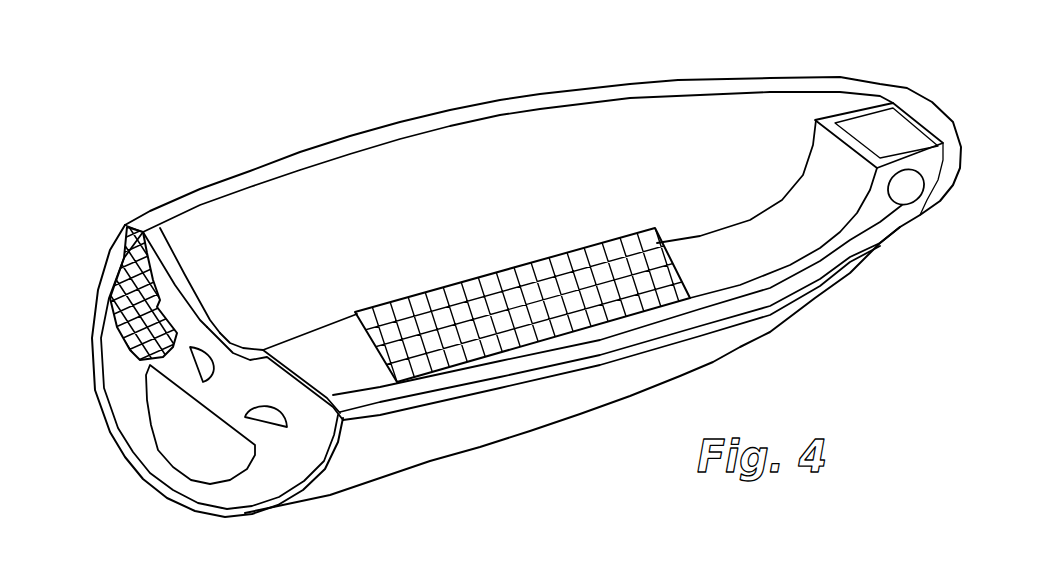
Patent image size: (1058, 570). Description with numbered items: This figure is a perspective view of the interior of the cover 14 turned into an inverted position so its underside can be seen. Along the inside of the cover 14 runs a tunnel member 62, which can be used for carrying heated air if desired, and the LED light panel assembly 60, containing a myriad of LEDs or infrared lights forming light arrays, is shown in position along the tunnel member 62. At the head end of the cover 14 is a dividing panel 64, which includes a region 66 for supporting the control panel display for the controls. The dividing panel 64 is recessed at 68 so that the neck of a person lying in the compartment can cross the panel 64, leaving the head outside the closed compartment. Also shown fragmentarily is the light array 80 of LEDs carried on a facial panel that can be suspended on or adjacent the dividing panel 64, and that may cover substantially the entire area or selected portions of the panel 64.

The cover 14 is at (678, 80).
The light panel assembly 60 is at (527, 280).
The tunnel member 62 is at (755, 262).
The dividing panel 64 is at (162, 287).
The region for supporting the control panel display 66 is at (187, 453).
The recess 68 is at (233, 347).
The light array 80 is at (140, 300).